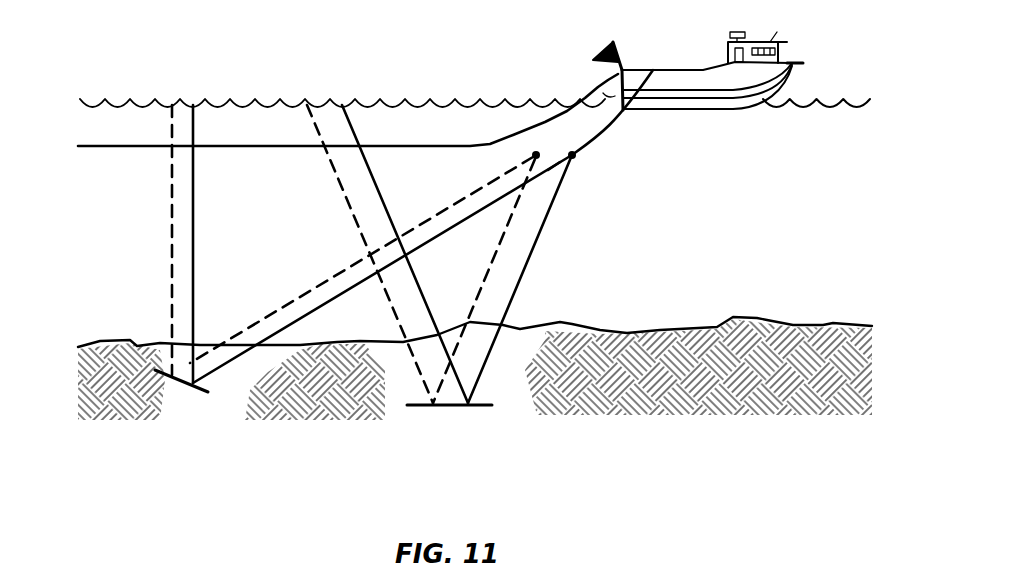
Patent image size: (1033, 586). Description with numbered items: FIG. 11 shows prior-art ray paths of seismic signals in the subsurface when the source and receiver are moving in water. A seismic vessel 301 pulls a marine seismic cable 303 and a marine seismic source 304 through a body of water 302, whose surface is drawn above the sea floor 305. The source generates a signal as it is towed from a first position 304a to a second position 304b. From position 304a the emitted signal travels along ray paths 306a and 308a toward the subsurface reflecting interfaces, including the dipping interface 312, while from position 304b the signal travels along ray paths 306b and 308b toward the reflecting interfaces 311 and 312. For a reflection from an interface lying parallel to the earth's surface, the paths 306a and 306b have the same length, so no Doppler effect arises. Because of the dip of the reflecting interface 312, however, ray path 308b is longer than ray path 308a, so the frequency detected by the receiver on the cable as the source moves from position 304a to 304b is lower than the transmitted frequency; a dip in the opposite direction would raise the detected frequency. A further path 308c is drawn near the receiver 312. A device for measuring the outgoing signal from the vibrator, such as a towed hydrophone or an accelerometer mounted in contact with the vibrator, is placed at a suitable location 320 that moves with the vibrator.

The seismic vessel 301 is at (683, 69).
The body of water 302 is at (120, 104).
The marine seismic cable 303 is at (135, 148).
The marine seismic source 304 is at (572, 155).
The first position 304a is at (533, 152).
The second position 304b is at (575, 158).
The sea floor 305 is at (132, 342).
The ray path 306a is at (500, 240).
The ray path 306b is at (527, 262).
The ray path 308a is at (325, 281).
The ray path 308b is at (195, 215).
The surface reflected travel path 308c is at (172, 247).
The seismic receiver 311 is at (426, 406).
The subsurface reflecting interface 312 is at (173, 378).
The location 320 is at (553, 170).